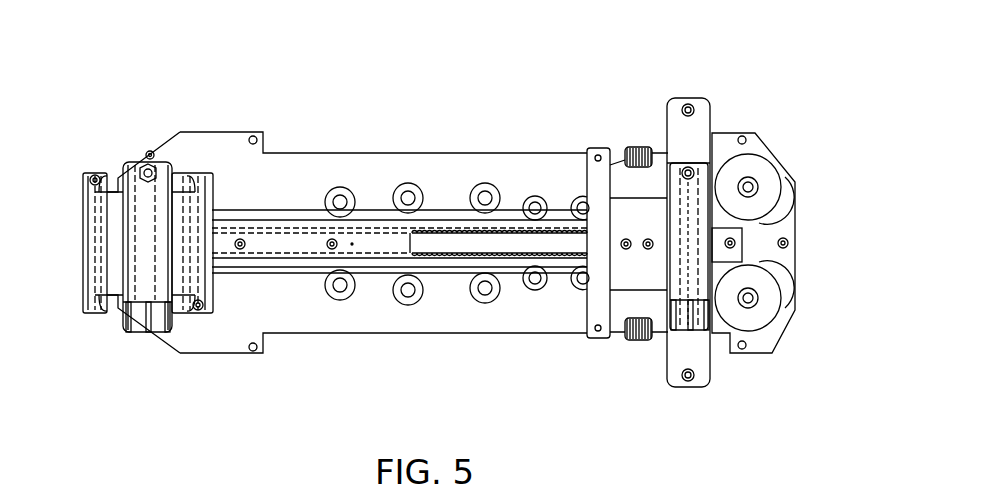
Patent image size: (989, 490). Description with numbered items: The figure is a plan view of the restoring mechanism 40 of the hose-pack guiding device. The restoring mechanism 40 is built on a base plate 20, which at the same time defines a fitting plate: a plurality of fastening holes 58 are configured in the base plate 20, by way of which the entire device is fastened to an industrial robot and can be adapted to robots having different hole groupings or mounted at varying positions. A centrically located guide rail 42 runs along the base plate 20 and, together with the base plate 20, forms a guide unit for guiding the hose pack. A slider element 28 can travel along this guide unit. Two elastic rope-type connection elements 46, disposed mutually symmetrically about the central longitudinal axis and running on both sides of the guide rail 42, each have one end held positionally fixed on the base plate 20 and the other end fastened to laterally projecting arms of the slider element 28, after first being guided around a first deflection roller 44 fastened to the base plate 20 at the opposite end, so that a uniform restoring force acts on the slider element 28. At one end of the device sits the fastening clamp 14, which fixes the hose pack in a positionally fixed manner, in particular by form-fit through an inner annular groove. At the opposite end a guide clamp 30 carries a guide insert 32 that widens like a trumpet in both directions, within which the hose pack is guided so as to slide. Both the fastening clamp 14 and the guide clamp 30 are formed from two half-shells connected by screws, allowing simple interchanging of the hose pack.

The fastening clamp 14 is at (692, 193).
The base plate 20 is at (223, 153).
The slider element 28 is at (608, 265).
The guide clamp 30 is at (150, 268).
The guide insert 32 is at (100, 207).
The restoring mechanism 40 is at (481, 82).
The guide rail 42 is at (393, 252).
The first deflection rollers 44 is at (750, 167).
The connection element 46 is at (280, 213).
The fastening holes 58 is at (340, 202).